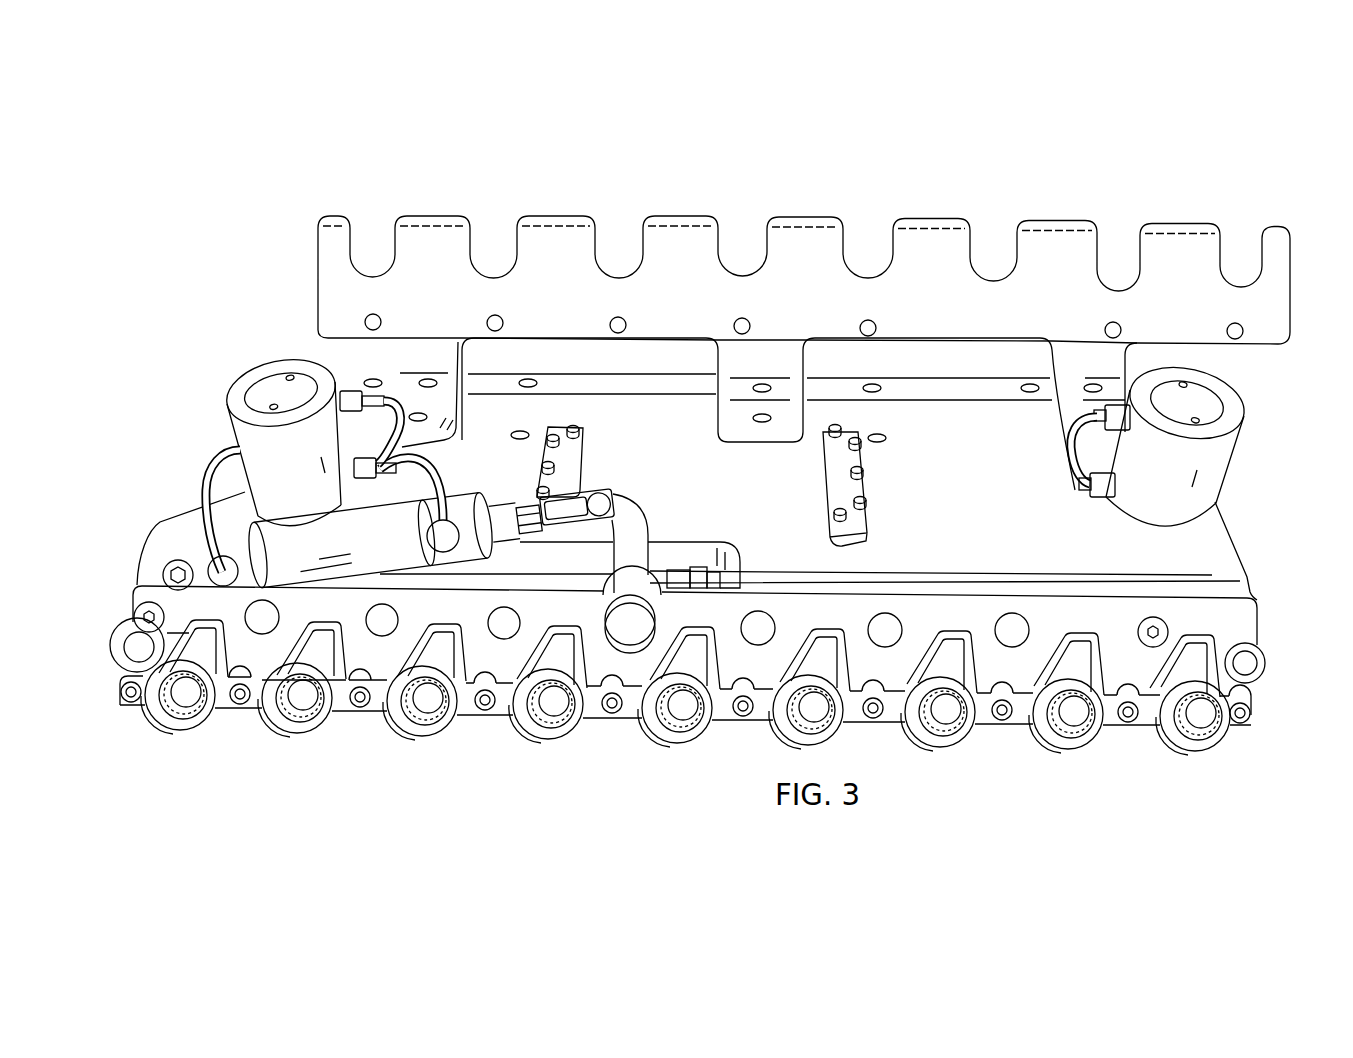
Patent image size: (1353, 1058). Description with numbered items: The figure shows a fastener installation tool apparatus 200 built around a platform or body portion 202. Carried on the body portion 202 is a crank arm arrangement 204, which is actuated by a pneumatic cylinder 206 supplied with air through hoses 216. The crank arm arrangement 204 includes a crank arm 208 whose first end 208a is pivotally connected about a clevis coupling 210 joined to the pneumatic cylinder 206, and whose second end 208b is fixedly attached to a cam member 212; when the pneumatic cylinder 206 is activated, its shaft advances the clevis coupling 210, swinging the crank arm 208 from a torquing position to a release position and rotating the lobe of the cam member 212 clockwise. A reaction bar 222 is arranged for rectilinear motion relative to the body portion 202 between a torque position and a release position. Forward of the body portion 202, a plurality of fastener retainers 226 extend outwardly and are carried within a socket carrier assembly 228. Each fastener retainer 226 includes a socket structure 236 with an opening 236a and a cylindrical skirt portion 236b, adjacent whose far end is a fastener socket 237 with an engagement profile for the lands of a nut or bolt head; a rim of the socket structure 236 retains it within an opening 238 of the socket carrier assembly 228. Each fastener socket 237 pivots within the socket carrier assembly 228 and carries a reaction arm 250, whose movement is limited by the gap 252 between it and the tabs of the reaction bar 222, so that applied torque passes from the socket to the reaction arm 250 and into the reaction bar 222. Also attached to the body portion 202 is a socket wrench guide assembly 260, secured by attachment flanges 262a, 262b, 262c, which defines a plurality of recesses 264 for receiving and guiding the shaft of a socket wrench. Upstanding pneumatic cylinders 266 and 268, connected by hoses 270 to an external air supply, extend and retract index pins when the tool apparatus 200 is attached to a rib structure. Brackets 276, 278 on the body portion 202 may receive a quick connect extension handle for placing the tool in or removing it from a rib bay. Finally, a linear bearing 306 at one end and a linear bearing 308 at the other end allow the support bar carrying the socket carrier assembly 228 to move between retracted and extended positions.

The tool apparatus 200 is at (1165, 188).
The body portion 202 is at (1238, 538).
The crank arm arrangement 204 is at (677, 475).
The pneumatic cylinder 206 is at (387, 548).
The crank arm 208 is at (646, 528).
The first end of crank arm 208a is at (622, 509).
The second end of crank arm 208b is at (622, 563).
The clevis coupling 210 is at (581, 497).
The cam member 212 is at (627, 642).
The hoses 216 is at (210, 472).
The reaction bar 222 is at (1240, 618).
The fastener retainers 226 is at (1232, 694).
The socket carrier assembly 228 is at (1146, 715).
The socket structure 236 is at (1223, 737).
The opening 236a is at (1053, 728).
The skirt portion 236b is at (1055, 690).
The fastener socket 237 is at (936, 726).
The opening 238 is at (457, 704).
The reaction arm 250 is at (703, 646).
The gap 252 is at (800, 645).
The socket wrench guide assembly 260 is at (712, 212).
The attachment flange 262a is at (445, 355).
The attachment flange 262b is at (785, 355).
The attachment flange 262c is at (1118, 355).
The recesses 264 is at (853, 268).
The pneumatic cylinder 266 is at (282, 370).
The pneumatic cylinder 268 is at (1232, 405).
The hoses 270 is at (370, 456).
The bracket 276 is at (573, 443).
The bracket 278 is at (870, 458).
The linear bearing 306 is at (1247, 662).
The linear bearing 308 is at (136, 648).